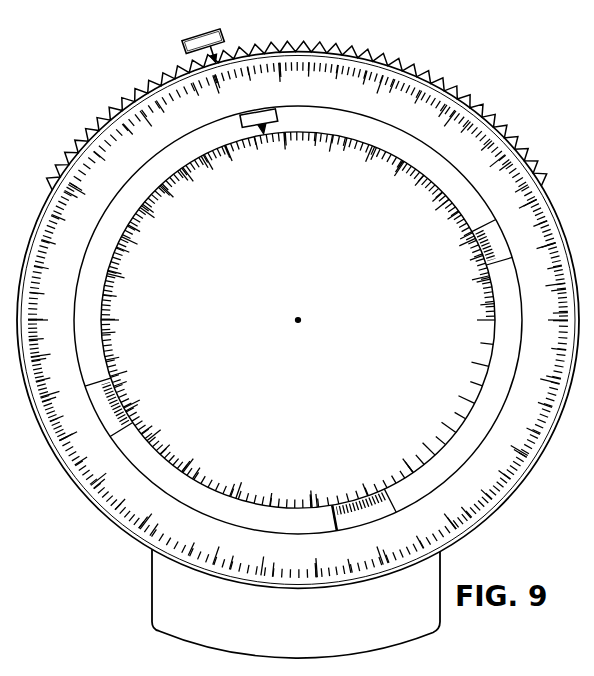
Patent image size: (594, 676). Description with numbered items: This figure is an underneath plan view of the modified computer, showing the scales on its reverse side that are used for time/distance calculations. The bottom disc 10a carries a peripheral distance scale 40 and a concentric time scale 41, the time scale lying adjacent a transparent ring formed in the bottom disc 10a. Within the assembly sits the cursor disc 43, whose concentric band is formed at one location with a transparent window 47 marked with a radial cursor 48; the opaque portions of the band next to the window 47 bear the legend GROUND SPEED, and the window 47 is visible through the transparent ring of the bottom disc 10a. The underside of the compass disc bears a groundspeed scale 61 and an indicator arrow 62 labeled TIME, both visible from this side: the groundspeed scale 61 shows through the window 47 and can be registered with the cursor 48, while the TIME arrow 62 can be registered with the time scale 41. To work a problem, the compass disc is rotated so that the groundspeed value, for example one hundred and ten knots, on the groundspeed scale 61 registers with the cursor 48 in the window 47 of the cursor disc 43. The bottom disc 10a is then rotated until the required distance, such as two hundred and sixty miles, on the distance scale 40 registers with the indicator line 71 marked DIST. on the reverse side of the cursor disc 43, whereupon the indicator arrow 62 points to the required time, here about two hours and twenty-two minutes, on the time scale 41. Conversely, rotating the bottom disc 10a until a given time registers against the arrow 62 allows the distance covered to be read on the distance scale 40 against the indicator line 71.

The bottom disc 10a is at (298, 320).
The peripheral distance scale 40 is at (298, 305).
The time scale 41 is at (298, 320).
The cursor disc 43 is at (297, 115).
The transparent window 47 is at (314, 488).
The radial cursor 48 is at (364, 488).
The groundspeed scale 61 is at (296, 603).
The indicator arrow 62 is at (273, 122).
The indicator line 71 is at (193, 46).